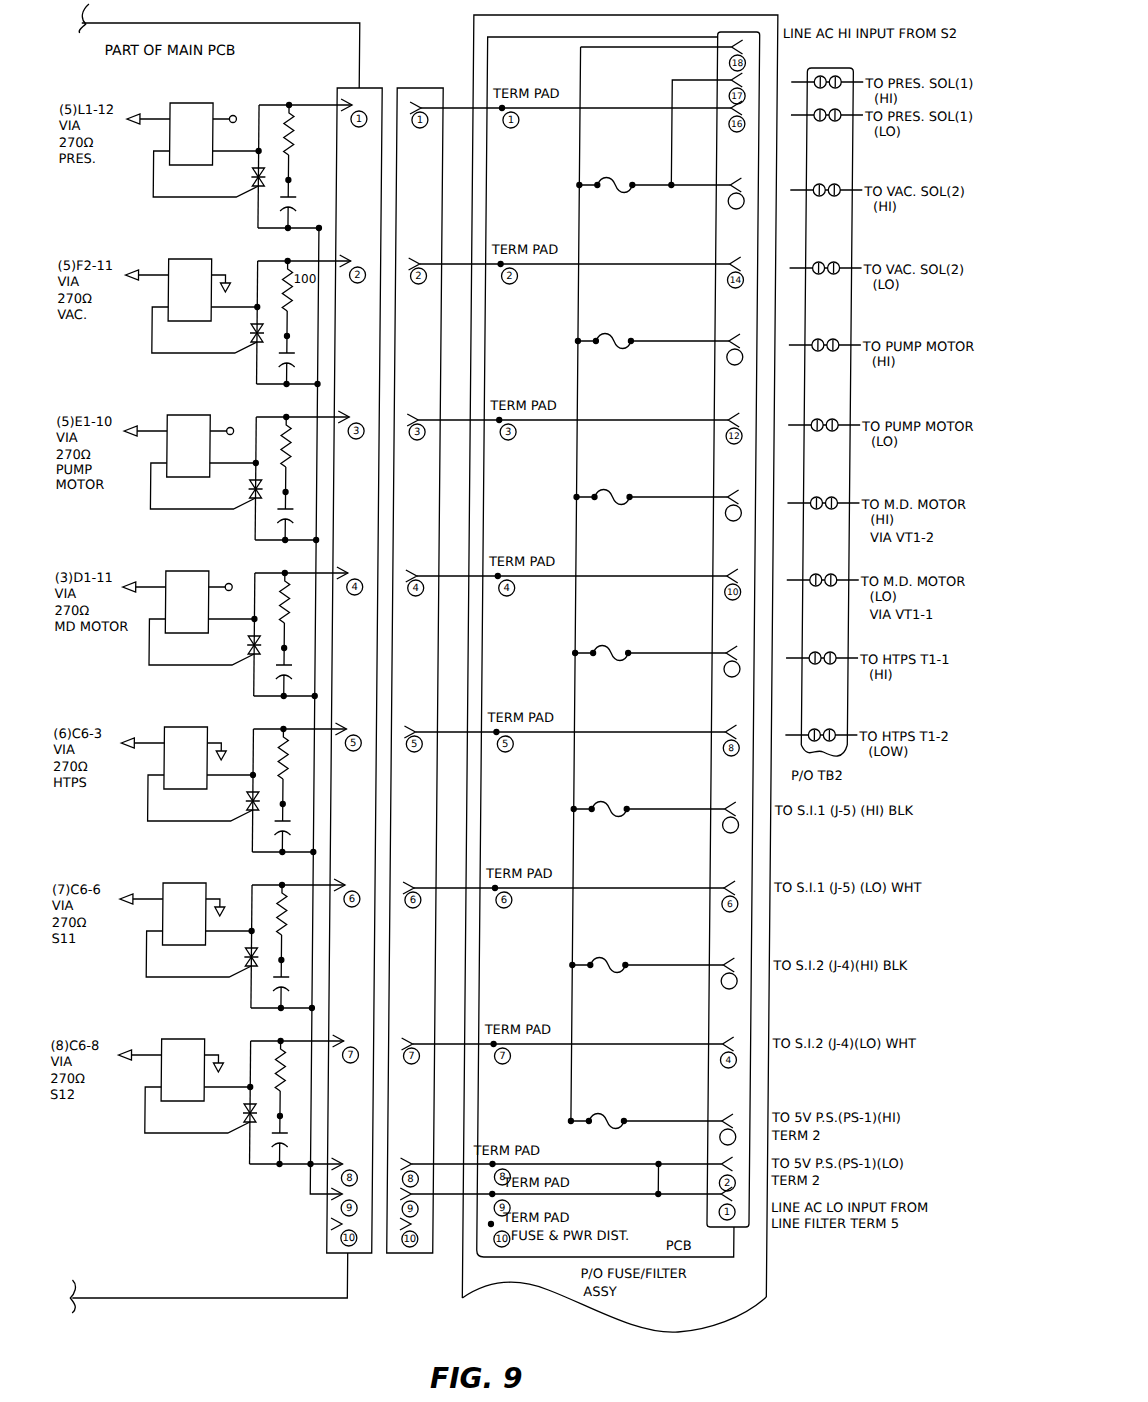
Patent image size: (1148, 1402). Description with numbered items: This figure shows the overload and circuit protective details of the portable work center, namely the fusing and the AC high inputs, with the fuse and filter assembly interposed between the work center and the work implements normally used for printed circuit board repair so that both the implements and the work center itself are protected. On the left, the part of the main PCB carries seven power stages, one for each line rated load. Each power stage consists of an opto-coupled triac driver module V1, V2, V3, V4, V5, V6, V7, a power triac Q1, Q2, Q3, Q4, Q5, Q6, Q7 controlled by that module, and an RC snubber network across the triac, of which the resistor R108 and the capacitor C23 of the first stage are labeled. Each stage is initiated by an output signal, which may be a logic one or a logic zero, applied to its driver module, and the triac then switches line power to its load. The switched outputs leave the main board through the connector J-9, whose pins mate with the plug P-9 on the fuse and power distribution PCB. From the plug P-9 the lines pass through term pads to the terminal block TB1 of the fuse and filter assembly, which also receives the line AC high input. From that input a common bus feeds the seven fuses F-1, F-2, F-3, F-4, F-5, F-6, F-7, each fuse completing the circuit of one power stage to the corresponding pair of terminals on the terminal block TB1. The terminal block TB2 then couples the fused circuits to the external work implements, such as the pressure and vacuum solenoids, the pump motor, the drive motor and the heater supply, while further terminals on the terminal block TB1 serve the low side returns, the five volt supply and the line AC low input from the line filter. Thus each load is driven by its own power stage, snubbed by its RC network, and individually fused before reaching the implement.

The opto-coupled triac driver module V1 is at (192, 140).
The opto-coupled triac driver module V2 is at (191, 296).
The opto-coupled triac driver module V3 is at (189, 452).
The opto-coupled triac driver module V4 is at (188, 608).
The opto-coupled triac driver module V5 is at (187, 764).
The opto-coupled triac driver module V6 is at (185, 920).
The opto-coupled triac driver module V7 is at (184, 1076).
The power triac Q1 is at (248, 166).
The power triac Q2 is at (247, 322).
The power triac Q3 is at (245, 478).
The power triac Q4 is at (244, 634).
The power triac Q5 is at (242, 790).
The power triac Q6 is at (241, 946).
The power triac Q7 is at (240, 1102).
The snubber resistor R108 is at (306, 129).
The snubber capacitor C23 is at (304, 193).
The fuse F-1 is at (661, 187).
The fuse F-2 is at (659, 343).
The fuse F-3 is at (658, 499).
The fuse F-4 is at (656, 655).
The fuse F-5 is at (655, 811).
The fuse F-6 is at (654, 967).
The fuse F-7 is at (652, 1123).
The connector J-9 is at (348, 658).
The plug P-9 is at (415, 656).
The terminal block TB1 is at (733, 623).
The terminal block TB2 is at (822, 405).